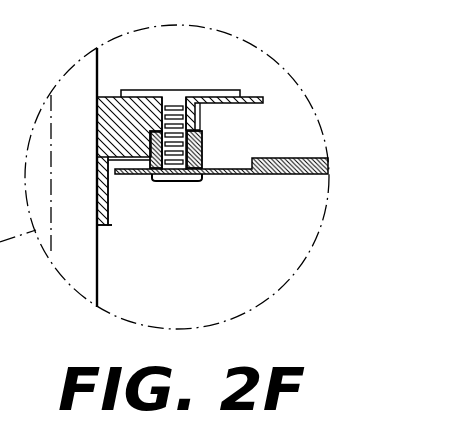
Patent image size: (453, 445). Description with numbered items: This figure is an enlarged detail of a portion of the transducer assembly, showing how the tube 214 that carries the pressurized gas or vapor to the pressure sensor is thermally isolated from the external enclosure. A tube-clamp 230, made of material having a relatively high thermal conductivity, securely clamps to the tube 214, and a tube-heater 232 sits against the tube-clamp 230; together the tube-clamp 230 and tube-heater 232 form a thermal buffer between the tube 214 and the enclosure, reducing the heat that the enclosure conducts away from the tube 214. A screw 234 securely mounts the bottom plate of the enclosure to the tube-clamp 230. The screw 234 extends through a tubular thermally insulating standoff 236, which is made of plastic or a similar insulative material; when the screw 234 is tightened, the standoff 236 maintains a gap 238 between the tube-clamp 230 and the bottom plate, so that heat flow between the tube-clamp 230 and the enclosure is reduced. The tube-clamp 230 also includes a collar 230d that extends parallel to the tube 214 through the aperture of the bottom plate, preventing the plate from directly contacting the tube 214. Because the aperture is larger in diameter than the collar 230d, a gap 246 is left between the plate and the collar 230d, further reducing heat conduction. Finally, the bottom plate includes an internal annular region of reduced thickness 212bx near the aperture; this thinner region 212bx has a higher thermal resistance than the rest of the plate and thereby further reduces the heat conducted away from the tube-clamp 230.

The tube 214 is at (97, 286).
The tube-clamp 230 is at (108, 96).
The gap 246 is at (113, 178).
The collar 230d is at (107, 228).
The tube-heater 232 is at (195, 89).
The screw 234 is at (183, 169).
The standoff 236 is at (206, 150).
The gap 238 is at (126, 174).
The internal annular region of reduced thickness 212bx is at (227, 176).